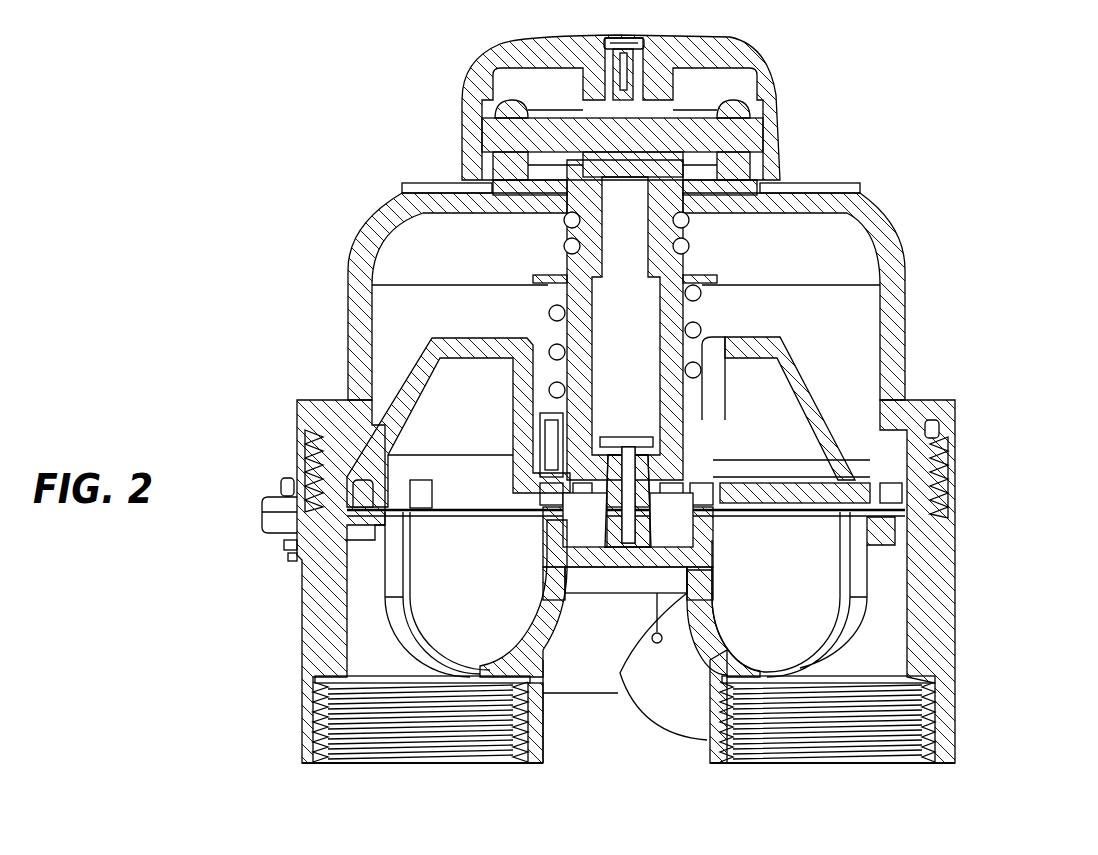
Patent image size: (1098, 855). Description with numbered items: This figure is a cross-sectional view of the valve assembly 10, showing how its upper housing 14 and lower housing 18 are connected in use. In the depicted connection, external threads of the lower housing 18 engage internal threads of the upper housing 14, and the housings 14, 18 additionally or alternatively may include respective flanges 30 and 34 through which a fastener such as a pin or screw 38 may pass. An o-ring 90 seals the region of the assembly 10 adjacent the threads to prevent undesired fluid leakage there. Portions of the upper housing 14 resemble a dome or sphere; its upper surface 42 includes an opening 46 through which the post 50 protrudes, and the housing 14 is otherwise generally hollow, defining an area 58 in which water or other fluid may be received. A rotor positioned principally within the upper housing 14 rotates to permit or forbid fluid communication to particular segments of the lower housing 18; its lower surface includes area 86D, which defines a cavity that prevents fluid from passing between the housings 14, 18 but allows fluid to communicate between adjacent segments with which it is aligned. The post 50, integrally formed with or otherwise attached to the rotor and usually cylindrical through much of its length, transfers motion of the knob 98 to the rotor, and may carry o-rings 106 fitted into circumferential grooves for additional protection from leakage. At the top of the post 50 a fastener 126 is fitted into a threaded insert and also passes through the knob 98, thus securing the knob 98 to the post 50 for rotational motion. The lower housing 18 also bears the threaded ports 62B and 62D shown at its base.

The assembly 10 is at (1010, 168).
The upper housing 14 is at (905, 297).
The lower housing 18 is at (962, 645).
The flange 30 is at (262, 508).
The flange 34 is at (262, 527).
The screw 38 is at (282, 480).
The upper surface 42 is at (815, 184).
The opening 46 is at (704, 173).
The post 50 is at (700, 318).
The area 58 is at (434, 327).
The threaded inlet port 62B is at (422, 765).
The threaded outlet port 62D is at (828, 768).
The area 86D is at (440, 400).
The o-ring 90 is at (940, 428).
The knob 98 is at (777, 92).
The o-rings 106 is at (690, 248).
The fastener 126 is at (627, 40).